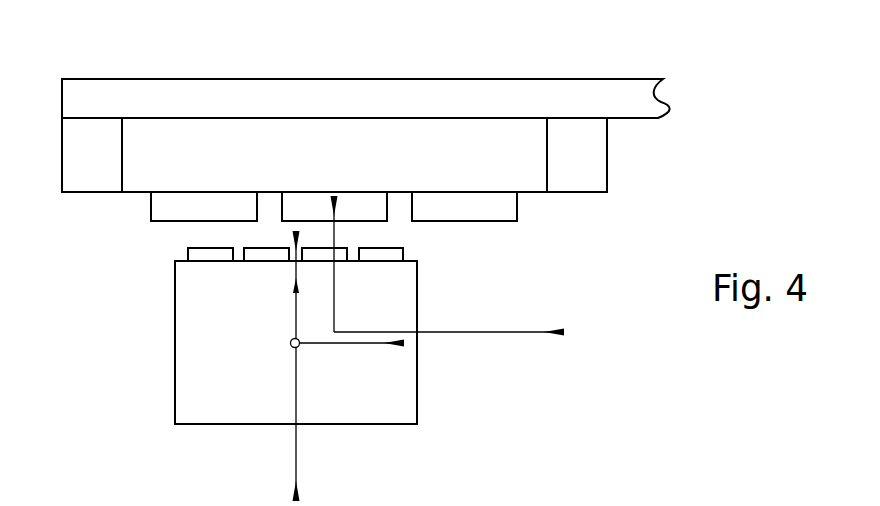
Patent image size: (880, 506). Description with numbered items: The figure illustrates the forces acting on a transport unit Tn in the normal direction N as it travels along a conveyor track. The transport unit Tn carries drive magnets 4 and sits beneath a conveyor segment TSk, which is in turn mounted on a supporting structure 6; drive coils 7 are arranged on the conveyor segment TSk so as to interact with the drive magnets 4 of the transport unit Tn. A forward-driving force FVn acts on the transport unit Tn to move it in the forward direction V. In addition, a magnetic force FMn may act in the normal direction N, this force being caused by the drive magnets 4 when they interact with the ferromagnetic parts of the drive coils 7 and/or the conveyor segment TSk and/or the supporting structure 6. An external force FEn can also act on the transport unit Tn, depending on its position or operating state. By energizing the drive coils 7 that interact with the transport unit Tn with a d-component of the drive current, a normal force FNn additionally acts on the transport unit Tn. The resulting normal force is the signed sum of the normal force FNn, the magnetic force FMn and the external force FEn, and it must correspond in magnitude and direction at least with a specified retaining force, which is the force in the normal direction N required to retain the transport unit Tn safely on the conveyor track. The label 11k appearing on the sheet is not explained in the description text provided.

The supporting structure 6 is at (590, 100).
The conveyor segment TSk is at (195, 158).
The drive coils 7 is at (298, 205).
The drive magnets 4 is at (258, 256).
The transport unit Tn is at (418, 383).
The normal direction N is at (336, 246).
The forward direction V is at (462, 324).
The normal force FNn is at (277, 285).
The magnetic force FMn is at (320, 281).
The forward-driving force FVn is at (351, 363).
The external force FEn is at (316, 424).
The sheet/figure index 11k is at (640, 492).